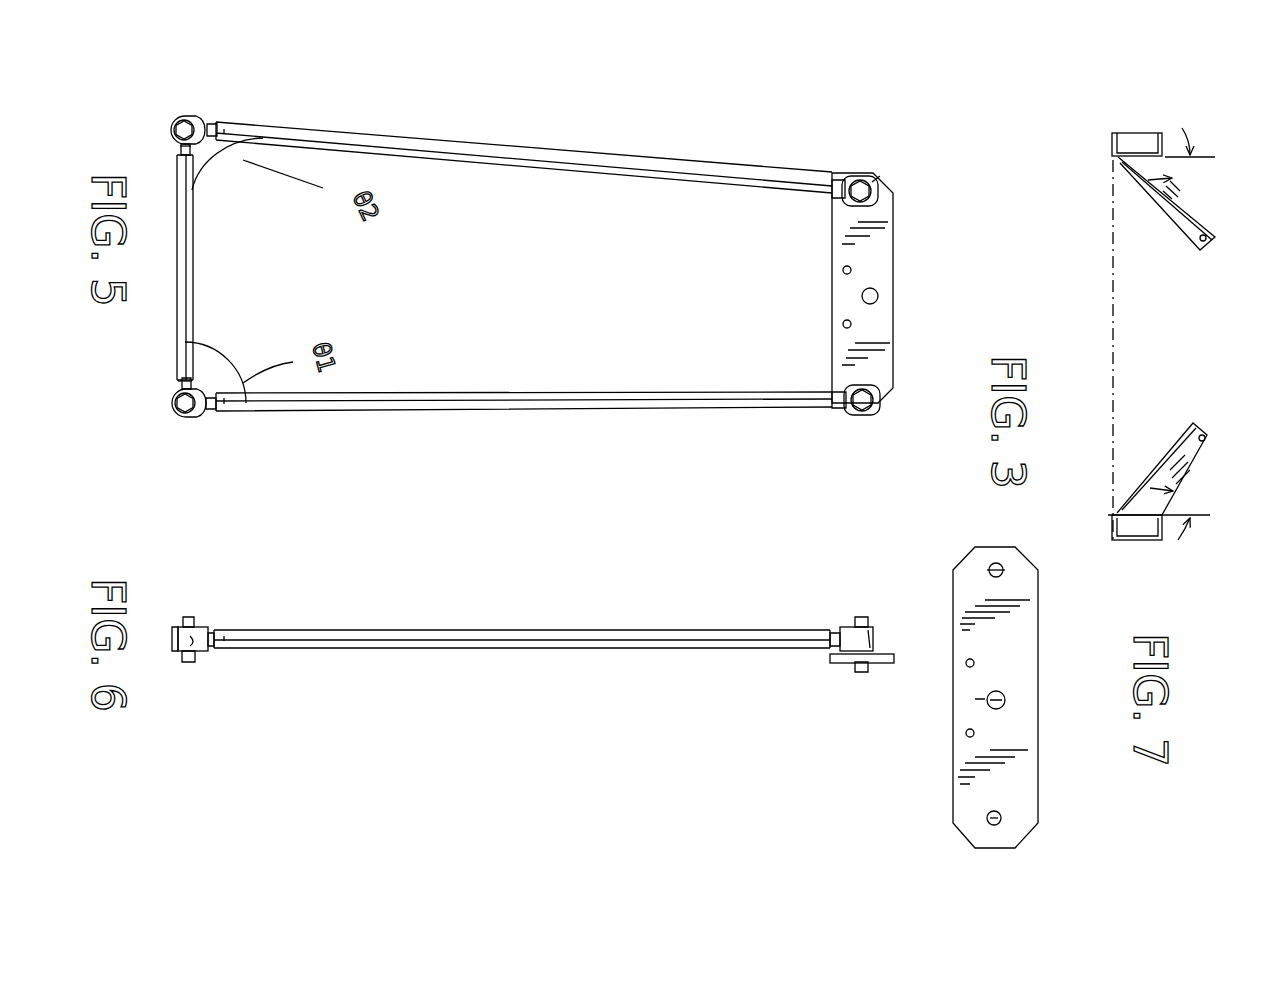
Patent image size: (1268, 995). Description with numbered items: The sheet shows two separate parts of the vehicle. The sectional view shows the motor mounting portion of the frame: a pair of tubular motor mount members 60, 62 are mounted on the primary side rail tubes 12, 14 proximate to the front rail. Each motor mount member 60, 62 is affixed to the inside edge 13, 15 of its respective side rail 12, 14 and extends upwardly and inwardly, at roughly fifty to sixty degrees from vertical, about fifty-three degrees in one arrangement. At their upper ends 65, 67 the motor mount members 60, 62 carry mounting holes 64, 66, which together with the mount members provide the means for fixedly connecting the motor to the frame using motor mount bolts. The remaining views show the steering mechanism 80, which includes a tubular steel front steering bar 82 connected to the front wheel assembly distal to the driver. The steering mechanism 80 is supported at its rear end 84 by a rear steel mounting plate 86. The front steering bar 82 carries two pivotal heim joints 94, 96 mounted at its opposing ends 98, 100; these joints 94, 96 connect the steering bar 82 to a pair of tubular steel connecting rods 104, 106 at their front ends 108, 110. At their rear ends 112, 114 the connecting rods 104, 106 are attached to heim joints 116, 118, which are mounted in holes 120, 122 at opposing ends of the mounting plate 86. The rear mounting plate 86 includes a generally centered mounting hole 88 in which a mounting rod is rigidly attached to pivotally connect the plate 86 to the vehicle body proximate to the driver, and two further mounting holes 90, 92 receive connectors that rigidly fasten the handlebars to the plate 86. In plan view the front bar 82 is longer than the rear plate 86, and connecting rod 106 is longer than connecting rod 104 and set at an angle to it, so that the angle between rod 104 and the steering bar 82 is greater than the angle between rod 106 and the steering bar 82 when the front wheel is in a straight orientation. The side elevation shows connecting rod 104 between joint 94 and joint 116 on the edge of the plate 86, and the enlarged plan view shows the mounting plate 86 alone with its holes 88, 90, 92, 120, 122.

In FIG. 3, the primary side rail tube 12 is at (1137, 131).
In FIG. 3, the inside edge 13 is at (1118, 160).
In FIG. 3, the primary side rail tube 14 is at (1140, 540).
In FIG. 3, the inside edge 15 is at (1130, 433).
In FIG. 3, the motor mount member 60 is at (1192, 198).
In FIG. 3, the motor mount member 62 is at (1192, 472).
In FIG. 3, the mounting hole 64 is at (1206, 240).
In FIG. 3, the upper end 65 is at (1200, 253).
In FIG. 3, the mounting hole 66 is at (1205, 437).
In FIG. 3, the upper end 67 is at (1207, 433).
In FIG. 5, the steering mechanism 80 is at (488, 113).
In FIG. 5, the front steering bar 82 is at (203, 236).
In FIG. 5, the rear end 84 is at (834, 132).
In FIG. 5, the rear mounting plate 86 is at (898, 222).
In FIG. 6, the rear mounting plate 86 is at (826, 661).
In FIG. 7, the rear mounting plate 86 is at (1040, 650).
In FIG. 5, the mounting hole 88 is at (879, 297).
In FIG. 7, the mounting hole 88 is at (1005, 705).
In FIG. 5, the mounting hole 90 is at (842, 326).
In FIG. 7, the mounting hole 90 is at (965, 736).
In FIG. 5, the mounting hole 92 is at (842, 270).
In FIG. 7, the mounting hole 92 is at (965, 664).
In FIG. 5, the pivotal joint 94 is at (178, 418).
In FIG. 6, the pivotal joint 94 is at (198, 626).
In FIG. 5, the pivotal joint 96 is at (183, 113).
In FIG. 5, the end of steering bar 98 is at (178, 382).
In FIG. 5, the end of steering bar 100 is at (182, 154).
In FIG. 5, the connecting rod 104 is at (526, 412).
In FIG. 6, the connecting rod 104 is at (624, 630).
In FIG. 5, the connecting rod 106 is at (602, 152).
In FIG. 5, the front end 108 is at (216, 396).
In FIG. 6, the front end 108 is at (224, 632).
In FIG. 5, the front end 110 is at (212, 124).
In FIG. 5, the rear end 112 is at (835, 410).
In FIG. 6, the rear end 112 is at (836, 625).
In FIG. 5, the rear end 114 is at (836, 176).
In FIG. 5, the heim joint 116 is at (876, 405).
In FIG. 6, the heim joint 116 is at (882, 625).
In FIG. 5, the heim joint 118 is at (876, 182).
In FIG. 7, the hole 120 is at (1001, 822).
In FIG. 7, the hole 122 is at (1003, 568).